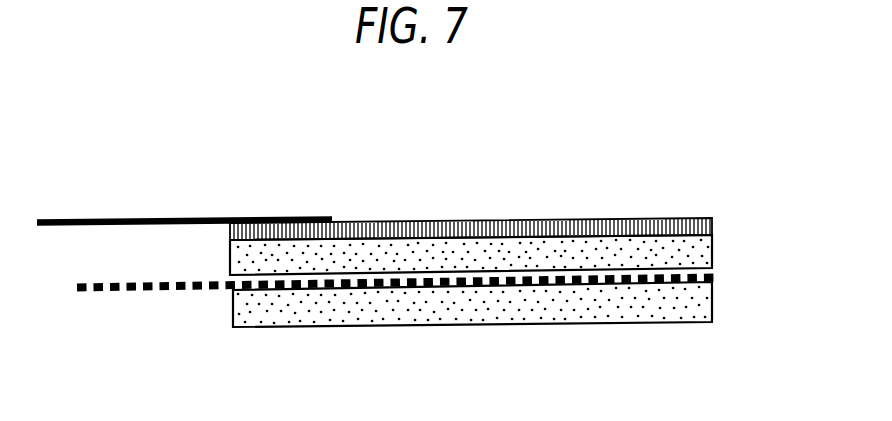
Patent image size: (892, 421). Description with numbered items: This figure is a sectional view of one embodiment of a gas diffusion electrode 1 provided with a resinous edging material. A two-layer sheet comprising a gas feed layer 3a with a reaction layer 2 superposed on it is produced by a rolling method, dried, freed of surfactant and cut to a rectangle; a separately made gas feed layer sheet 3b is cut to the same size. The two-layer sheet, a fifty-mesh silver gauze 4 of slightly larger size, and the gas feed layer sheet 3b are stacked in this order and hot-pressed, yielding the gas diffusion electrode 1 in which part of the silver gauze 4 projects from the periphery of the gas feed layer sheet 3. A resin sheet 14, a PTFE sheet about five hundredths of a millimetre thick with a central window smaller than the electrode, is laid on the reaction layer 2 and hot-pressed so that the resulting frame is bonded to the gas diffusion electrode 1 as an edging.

The gas diffusion electrode 1 is at (462, 178).
The reaction layer 2 is at (612, 218).
The gas feed layer sheet 3 is at (508, 306).
The gas feed layer 3a is at (712, 251).
The gas feed layer sheet 3b is at (712, 306).
The silver gauze 4 is at (108, 293).
The resin sheet 14 is at (108, 219).